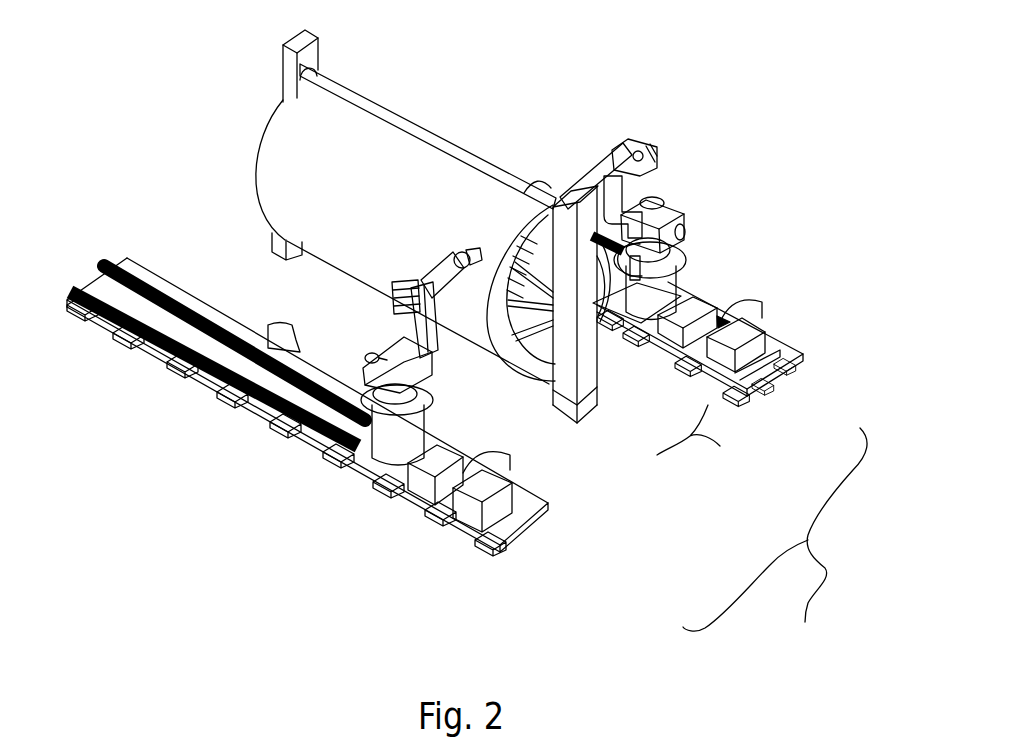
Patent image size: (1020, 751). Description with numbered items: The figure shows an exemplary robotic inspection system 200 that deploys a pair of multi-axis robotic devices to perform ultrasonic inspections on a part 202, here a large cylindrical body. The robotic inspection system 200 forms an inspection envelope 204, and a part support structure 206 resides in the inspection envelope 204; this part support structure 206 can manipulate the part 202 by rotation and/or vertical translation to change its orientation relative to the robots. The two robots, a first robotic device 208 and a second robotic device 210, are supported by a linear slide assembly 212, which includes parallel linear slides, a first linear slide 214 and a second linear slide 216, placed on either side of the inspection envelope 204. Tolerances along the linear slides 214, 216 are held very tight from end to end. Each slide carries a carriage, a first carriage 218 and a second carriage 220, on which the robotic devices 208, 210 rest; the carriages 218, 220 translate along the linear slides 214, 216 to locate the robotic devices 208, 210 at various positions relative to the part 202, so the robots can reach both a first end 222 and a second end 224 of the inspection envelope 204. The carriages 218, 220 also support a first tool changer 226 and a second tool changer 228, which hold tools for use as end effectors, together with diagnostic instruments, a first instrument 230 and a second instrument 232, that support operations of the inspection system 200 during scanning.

The robotic inspection system 200 is at (604, 72).
The part 202 is at (430, 184).
The inspection envelope 204 is at (699, 439).
The part support structure 206 is at (577, 439).
The first robotic device 208 is at (350, 349).
The second robotic device 210 is at (683, 206).
The linear slide assembly 212 is at (775, 539).
The first linear slide 214 is at (505, 550).
The second linear slide 216 is at (806, 365).
The first carriage 218 is at (521, 522).
The second carriage 220 is at (790, 337).
The first end 222 is at (639, 378).
The second end 224 is at (249, 163).
The first tool changer 226 is at (427, 480).
The second tool changer 228 is at (688, 298).
The first instrument 230 is at (462, 527).
The second instrument 232 is at (745, 338).